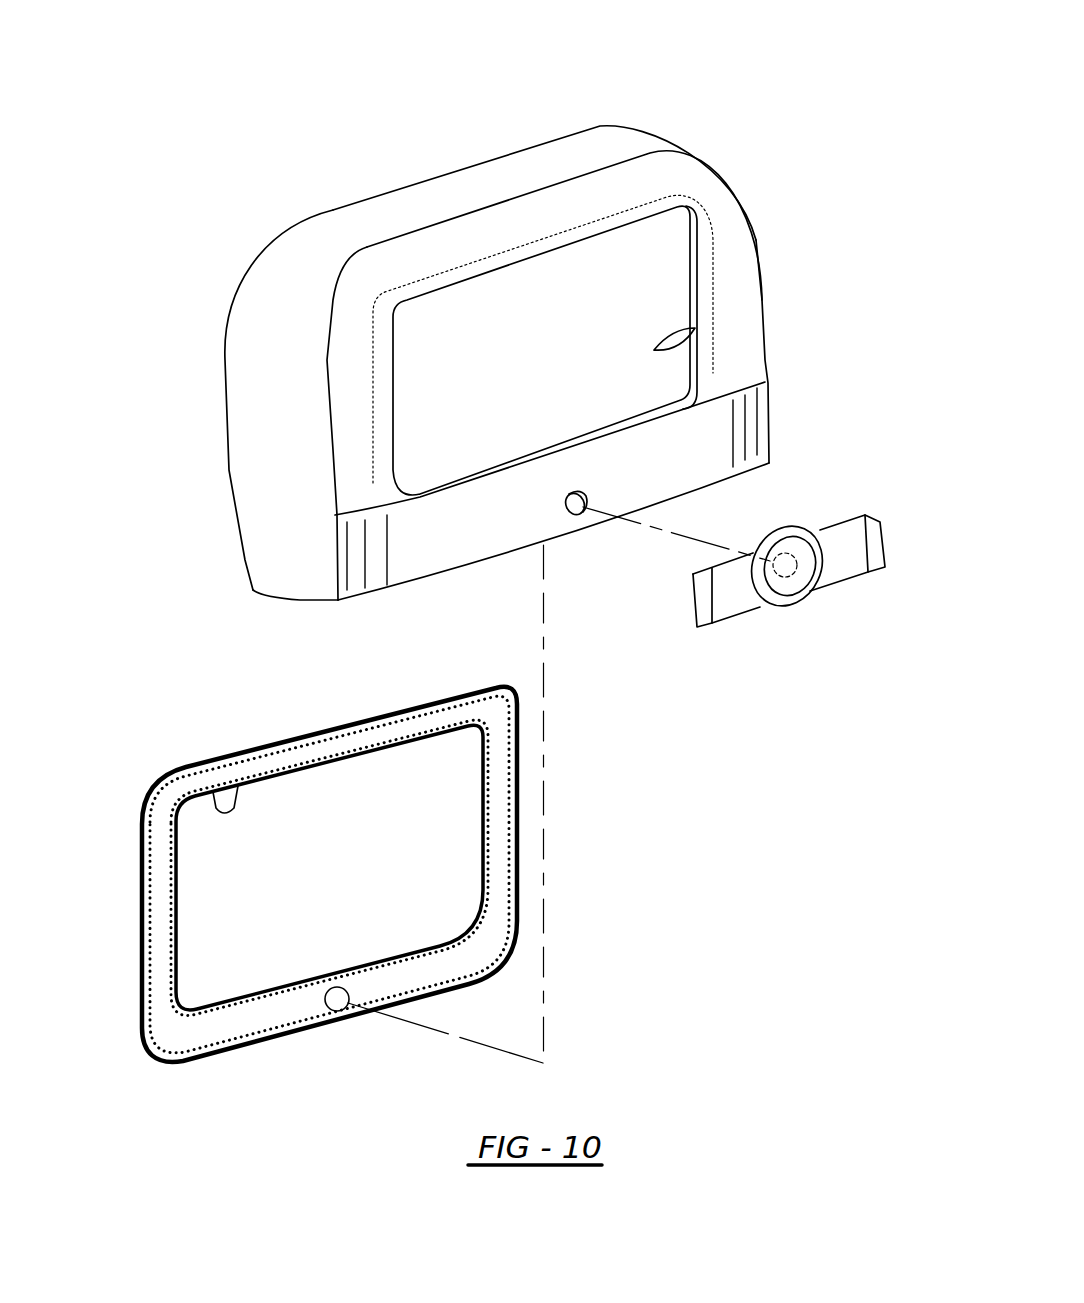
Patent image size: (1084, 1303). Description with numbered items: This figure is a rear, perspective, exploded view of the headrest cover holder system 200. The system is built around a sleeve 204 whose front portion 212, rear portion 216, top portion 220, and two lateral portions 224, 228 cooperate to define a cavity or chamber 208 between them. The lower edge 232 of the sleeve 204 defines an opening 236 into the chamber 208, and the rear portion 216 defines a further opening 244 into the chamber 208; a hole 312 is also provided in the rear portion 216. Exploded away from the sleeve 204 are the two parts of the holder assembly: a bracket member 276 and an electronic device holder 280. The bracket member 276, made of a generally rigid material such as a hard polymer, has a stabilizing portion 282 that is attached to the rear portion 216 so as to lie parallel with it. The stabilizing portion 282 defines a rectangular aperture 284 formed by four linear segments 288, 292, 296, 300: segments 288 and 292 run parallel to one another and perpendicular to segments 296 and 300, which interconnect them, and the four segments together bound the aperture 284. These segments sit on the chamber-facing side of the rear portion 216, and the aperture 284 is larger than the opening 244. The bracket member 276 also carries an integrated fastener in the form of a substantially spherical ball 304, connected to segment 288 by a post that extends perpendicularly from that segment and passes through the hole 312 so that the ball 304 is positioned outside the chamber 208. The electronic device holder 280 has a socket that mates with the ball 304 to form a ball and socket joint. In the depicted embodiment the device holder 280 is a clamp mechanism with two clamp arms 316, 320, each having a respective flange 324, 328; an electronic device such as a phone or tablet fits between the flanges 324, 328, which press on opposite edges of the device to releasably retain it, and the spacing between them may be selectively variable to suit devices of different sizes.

The headrest cover holder system 200 is at (748, 106).
The sleeve 204 is at (769, 285).
The cavity or chamber 208 is at (520, 367).
The front portion 212 is at (226, 468).
The rear portion 216 is at (418, 257).
The top portion 220 is at (493, 180).
The lateral portion 224 is at (247, 393).
The lateral portion 228 is at (758, 237).
The lower edge 232 is at (285, 603).
The opening 236 is at (360, 628).
The opening 244 is at (657, 352).
The bracket member 276 is at (140, 916).
The electronic device holder 280 is at (837, 583).
The stabilizing portion 282 is at (160, 1003).
The aperture 284 is at (214, 792).
The linear segment 288 is at (272, 1028).
The linear segment 292 is at (423, 726).
The linear segment 296 is at (143, 880).
The linear segment 300 is at (493, 827).
The ball 304 is at (340, 1003).
The hole 312 is at (574, 517).
The clamp arm 316 is at (836, 528).
The clamp arm 320 is at (730, 617).
The flange 324 is at (877, 538).
The flange 328 is at (707, 630).